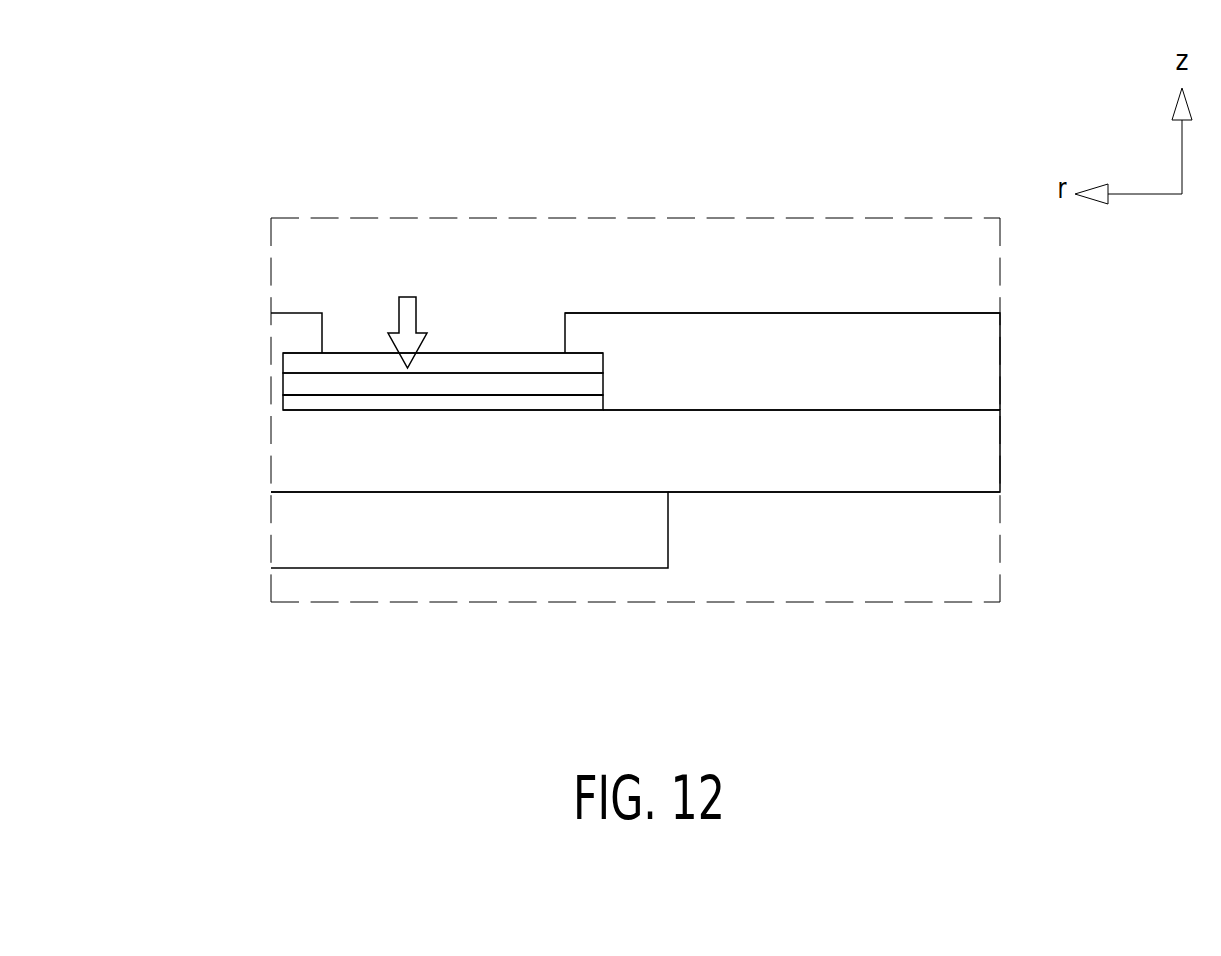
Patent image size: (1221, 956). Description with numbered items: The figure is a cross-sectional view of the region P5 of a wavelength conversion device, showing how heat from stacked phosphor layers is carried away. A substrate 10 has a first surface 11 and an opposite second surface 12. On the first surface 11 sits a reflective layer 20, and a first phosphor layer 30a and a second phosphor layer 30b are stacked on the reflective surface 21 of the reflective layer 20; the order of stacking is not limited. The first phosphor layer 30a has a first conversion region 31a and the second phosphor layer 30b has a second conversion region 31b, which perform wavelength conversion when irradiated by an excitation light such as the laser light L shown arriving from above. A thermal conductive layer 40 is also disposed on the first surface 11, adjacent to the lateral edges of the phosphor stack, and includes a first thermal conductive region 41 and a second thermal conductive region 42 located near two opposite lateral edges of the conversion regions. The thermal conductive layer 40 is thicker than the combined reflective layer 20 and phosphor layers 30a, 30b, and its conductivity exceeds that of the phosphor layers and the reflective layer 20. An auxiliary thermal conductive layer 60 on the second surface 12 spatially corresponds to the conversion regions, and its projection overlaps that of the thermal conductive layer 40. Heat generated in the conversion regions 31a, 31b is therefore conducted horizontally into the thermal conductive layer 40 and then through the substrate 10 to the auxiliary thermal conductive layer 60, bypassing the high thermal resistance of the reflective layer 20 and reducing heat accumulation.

The region P5 is at (380, 190).
The second thermal conductive region 42 is at (295, 313).
The laser light L is at (407, 312).
The first phosphor layer 30a is at (257, 371).
The second phosphor layer 30b is at (255, 393).
The reflective layer 20 is at (257, 418).
The first conversion region 31a is at (498, 365).
The second conversion region 31b is at (347, 382).
The reflective surface 21 is at (392, 395).
The thermal conductive layer 40 is at (710, 305).
The first thermal conductive region 41 is at (782, 312).
The substrate 10 is at (822, 478).
The first surface 11 is at (922, 410).
The second surface 12 is at (922, 493).
The auxiliary thermal conductive layer 60 is at (630, 555).